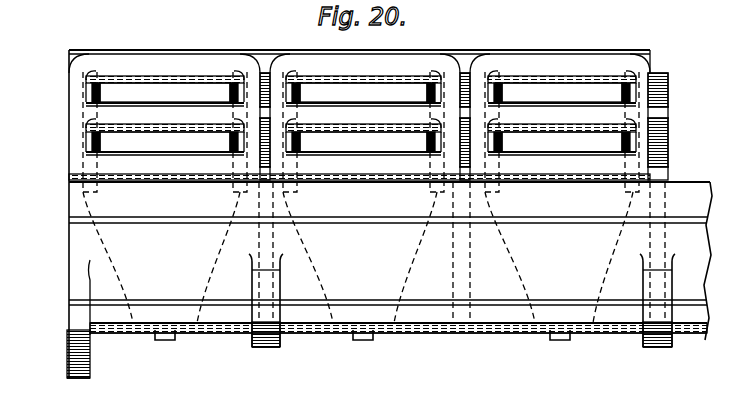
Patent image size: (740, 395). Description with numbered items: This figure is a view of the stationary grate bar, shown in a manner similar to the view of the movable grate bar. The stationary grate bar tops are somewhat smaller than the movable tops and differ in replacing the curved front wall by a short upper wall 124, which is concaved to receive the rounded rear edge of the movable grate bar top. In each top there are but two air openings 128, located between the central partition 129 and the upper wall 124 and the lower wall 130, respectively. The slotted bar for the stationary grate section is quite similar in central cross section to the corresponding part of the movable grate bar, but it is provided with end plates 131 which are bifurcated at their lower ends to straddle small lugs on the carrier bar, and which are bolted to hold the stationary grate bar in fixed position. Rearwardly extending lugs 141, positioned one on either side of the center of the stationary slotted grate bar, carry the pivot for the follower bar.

The upper wall 124 is at (287, 58).
The air openings 128 is at (195, 93).
The central partition 129 is at (361, 114).
The lower wall 130 is at (359, 166).
The end plate 131 is at (67, 357).
The rearwardly extending lugs 141 is at (279, 343).